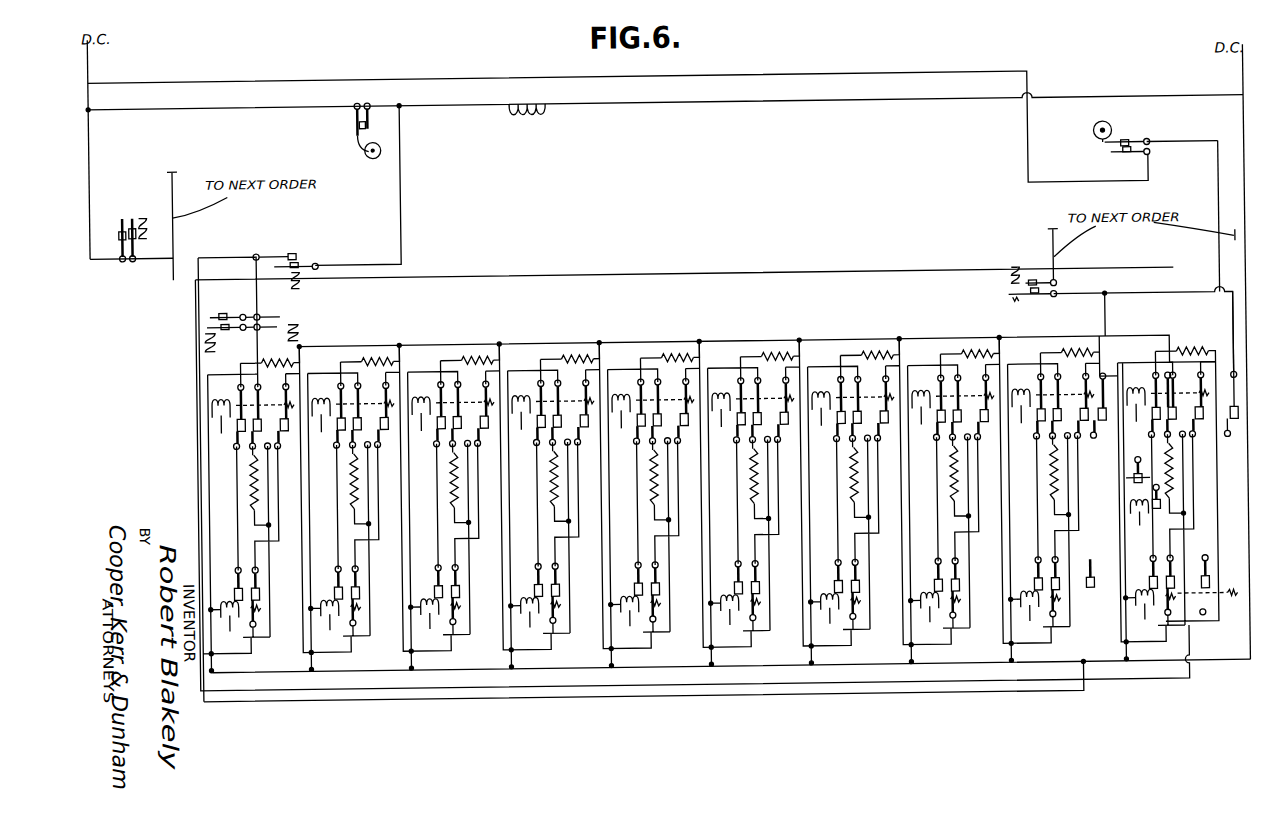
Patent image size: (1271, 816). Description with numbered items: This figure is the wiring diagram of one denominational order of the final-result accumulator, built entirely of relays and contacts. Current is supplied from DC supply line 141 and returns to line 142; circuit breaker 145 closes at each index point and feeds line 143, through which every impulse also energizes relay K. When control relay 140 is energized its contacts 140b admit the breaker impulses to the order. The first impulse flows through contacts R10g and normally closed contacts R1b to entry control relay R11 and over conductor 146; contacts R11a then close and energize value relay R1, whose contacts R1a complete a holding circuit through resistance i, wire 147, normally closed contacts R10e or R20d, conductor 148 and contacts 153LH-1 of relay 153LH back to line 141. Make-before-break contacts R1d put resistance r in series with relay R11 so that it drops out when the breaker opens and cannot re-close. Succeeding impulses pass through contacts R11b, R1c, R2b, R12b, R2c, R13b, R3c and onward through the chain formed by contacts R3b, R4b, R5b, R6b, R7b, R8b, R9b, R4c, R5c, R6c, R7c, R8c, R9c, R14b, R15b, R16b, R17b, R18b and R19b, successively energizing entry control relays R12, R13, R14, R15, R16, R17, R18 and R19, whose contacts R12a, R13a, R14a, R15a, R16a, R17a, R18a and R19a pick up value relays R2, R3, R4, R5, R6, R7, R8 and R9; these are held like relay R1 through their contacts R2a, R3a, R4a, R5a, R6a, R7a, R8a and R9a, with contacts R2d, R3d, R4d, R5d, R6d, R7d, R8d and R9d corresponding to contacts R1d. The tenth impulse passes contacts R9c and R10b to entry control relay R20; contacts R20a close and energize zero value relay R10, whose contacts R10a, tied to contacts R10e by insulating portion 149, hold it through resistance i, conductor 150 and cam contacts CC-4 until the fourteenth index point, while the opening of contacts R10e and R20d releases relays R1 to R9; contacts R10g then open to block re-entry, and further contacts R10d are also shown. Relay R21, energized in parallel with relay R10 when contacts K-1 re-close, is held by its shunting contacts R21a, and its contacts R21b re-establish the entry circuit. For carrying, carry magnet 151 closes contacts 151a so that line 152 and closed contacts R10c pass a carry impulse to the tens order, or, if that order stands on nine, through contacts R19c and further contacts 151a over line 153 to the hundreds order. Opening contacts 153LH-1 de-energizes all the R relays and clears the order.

The DC supply line 141 is at (92, 140).
The line 142 is at (1247, 625).
The line 143 is at (403, 172).
The circuit breaker 145 is at (354, 140).
The conductor 146 is at (487, 668).
The wire 147 is at (630, 343).
The conductor 148 is at (645, 688).
The insulating portion 149 is at (1165, 356).
The conductor 150 is at (1219, 278).
The carry magnet 151 is at (1010, 283).
The carry magnet contacts 151a is at (1058, 289).
The line 152 is at (1232, 318).
The line 153 is at (1053, 248).
The relay contacts 153LH is at (141, 212).
The contacts 153LH-1 is at (138, 236).
The control relay 140 is at (308, 280).
The relay contacts 140b is at (296, 251).
The K relay K is at (547, 103).
The contacts K1 K-1 is at (1138, 469).
The cam contacts CC-4 is at (1143, 143).
The contacts R10g is at (236, 313).
The relay R21 is at (327, 322).
The contacts R21a is at (1144, 496).
The contacts R21b is at (270, 311).
The resistance r' i is at (1200, 357).
The resistance r is at (638, 478).
The value relay R1 is at (221, 424).
The contacts R1a is at (228, 410).
The contacts R1b is at (270, 411).
The contacts R1c is at (287, 430).
The contacts R1d is at (240, 456).
The value relay R2 is at (321, 423).
The contacts R2a is at (328, 409).
The contacts R2b is at (370, 409).
The contacts R2c is at (387, 428).
The contacts R2d is at (340, 455).
The value relay R3 is at (421, 422).
The contacts R3a is at (428, 408).
The contacts R3b is at (470, 408).
The contacts R3c is at (487, 427).
The contacts R3d is at (440, 453).
The value relay R4 is at (521, 421).
The contacts R4a is at (528, 406).
The contacts R4b is at (570, 407).
The contacts R4c is at (587, 426).
The contacts R4d is at (540, 452).
The value relay R5 is at (621, 419).
The contacts R5a is at (628, 405).
The contacts R5b is at (670, 405).
The contacts R5c is at (687, 424).
The contacts R5d is at (640, 451).
The value relay R6 is at (721, 418).
The contacts R6a is at (728, 404).
The contacts R6b is at (770, 404).
The contacts R6c is at (787, 423).
The contacts R6d is at (740, 449).
The value relay R7 is at (821, 417).
The contacts R7a is at (828, 402).
The contacts R7b is at (870, 403).
The contacts R7c is at (887, 422).
The contacts R7d is at (840, 448).
The value relay R8 is at (921, 415).
The contacts R8a is at (928, 401).
The contacts R8b is at (970, 402).
The contacts R8c is at (987, 420).
The contacts R8d is at (940, 447).
The value relay R9 is at (1021, 414).
The contacts R9a is at (1028, 400).
The contacts R9b is at (1070, 400).
The contacts R9c is at (1087, 419).
The contacts R9d is at (1040, 445).
The zero value relay R10 is at (205, 335).
The contacts R10a is at (1142, 398).
The contacts R10b is at (1197, 470).
The contacts R10c is at (1197, 438).
The relay contact R10d is at (1216, 398).
The contacts R10e is at (1187, 399).
The entry control relay R11 is at (232, 624).
The contacts R11a is at (227, 576).
The contacts R11b is at (270, 590).
The entry control relay R12 is at (332, 623).
The contacts R12a is at (327, 575).
The contacts R12b is at (370, 588).
The entry control relay R13 is at (432, 622).
The contacts R13a is at (427, 574).
The contacts R13b is at (470, 587).
The entry control relay R14 is at (532, 620).
The contacts R14a is at (527, 572).
The contacts R14b is at (570, 586).
The entry control relay R15 is at (632, 619).
The contacts R15a is at (627, 571).
The contacts R15b is at (670, 584).
The entry control relay R16 is at (732, 618).
The contacts R16a is at (727, 570).
The contacts R16b is at (770, 583).
The entry control relay R17 is at (832, 616).
The contacts R17a is at (827, 569).
The contacts R17b is at (870, 582).
The entry control relay R18 is at (932, 615).
The contacts R18a is at (927, 567).
The contacts R18b is at (970, 581).
The entry control relay R19 is at (1032, 614).
The contacts R19a is at (1027, 566).
The contacts R19b is at (1070, 579).
The contacts R19c is at (1102, 593).
The entry control relay R20 is at (1146, 612).
The contacts R20a is at (1141, 564).
The contacts R20d is at (1206, 577).